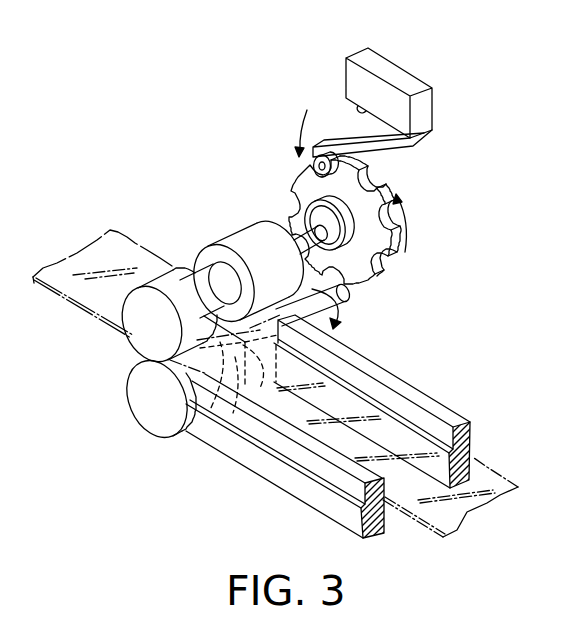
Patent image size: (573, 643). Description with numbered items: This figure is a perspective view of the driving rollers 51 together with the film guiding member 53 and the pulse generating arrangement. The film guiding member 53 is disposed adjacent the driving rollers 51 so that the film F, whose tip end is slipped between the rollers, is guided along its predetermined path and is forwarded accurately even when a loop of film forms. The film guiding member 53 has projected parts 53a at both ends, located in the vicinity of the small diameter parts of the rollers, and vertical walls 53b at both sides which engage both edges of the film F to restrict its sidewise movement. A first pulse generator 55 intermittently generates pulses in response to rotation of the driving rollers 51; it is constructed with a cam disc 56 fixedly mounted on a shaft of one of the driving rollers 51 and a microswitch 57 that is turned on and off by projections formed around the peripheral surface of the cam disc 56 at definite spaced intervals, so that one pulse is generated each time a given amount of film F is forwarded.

The driving rollers 51 is at (237, 232).
The film guiding member 53 is at (278, 473).
The projected parts 53a is at (196, 423).
The vertical walls 53b is at (317, 446).
The first pulse generator 55 is at (441, 88).
The cam disc 56 is at (368, 183).
The microswitch 57 is at (387, 64).
The film F is at (146, 250).